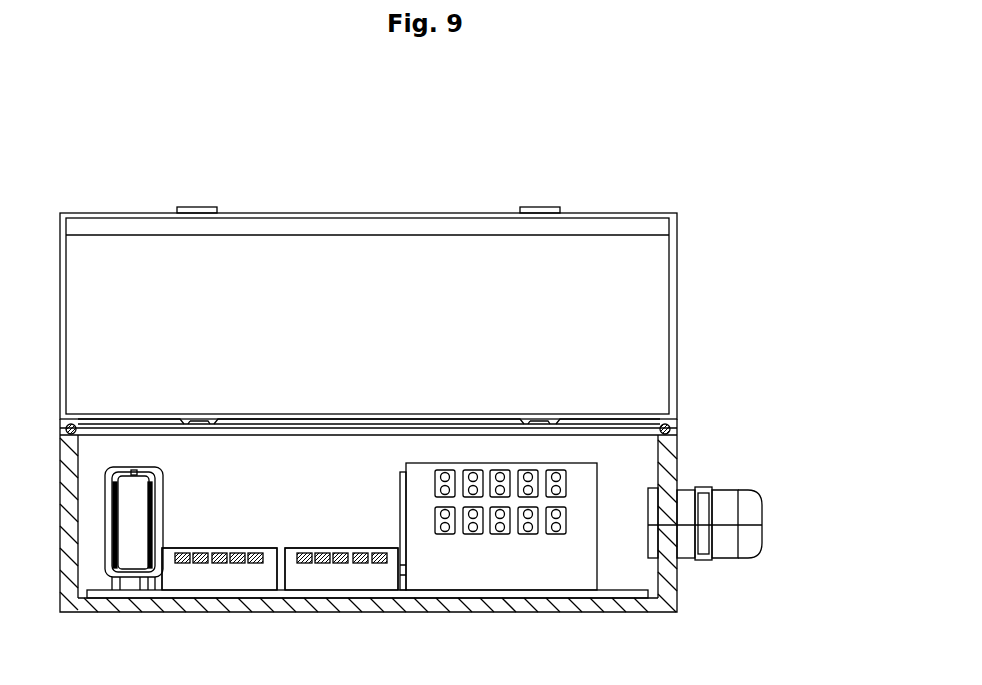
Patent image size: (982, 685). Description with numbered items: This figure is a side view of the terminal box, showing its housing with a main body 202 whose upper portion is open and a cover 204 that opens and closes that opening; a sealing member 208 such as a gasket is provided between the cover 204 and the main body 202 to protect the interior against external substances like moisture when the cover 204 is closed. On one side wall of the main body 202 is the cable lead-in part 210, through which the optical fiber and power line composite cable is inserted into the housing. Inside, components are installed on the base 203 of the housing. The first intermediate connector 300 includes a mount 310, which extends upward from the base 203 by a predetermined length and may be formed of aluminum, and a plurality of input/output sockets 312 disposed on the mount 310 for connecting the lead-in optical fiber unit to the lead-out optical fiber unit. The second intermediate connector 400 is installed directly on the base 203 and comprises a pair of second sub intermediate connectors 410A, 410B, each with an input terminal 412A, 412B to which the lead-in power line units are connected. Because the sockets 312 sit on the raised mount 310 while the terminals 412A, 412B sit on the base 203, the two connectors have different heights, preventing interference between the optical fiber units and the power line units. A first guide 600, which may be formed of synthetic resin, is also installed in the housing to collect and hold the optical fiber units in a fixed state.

The cover 204 is at (677, 325).
The sealing member 208 is at (677, 430).
The cable lead-in part 210 is at (725, 512).
The main body 202 is at (677, 598).
The base 203 is at (622, 598).
The first guide 600 is at (125, 584).
The second intermediate connector 400 is at (169, 598).
The input terminal 412A is at (199, 563).
The second sub intermediate connector 410A is at (249, 578).
The input terminal 412B is at (301, 563).
The second sub intermediate connector 410B is at (347, 578).
The first intermediate connector 300 is at (498, 571).
The input/output socket 312 is at (530, 534).
The mount 310 is at (580, 581).